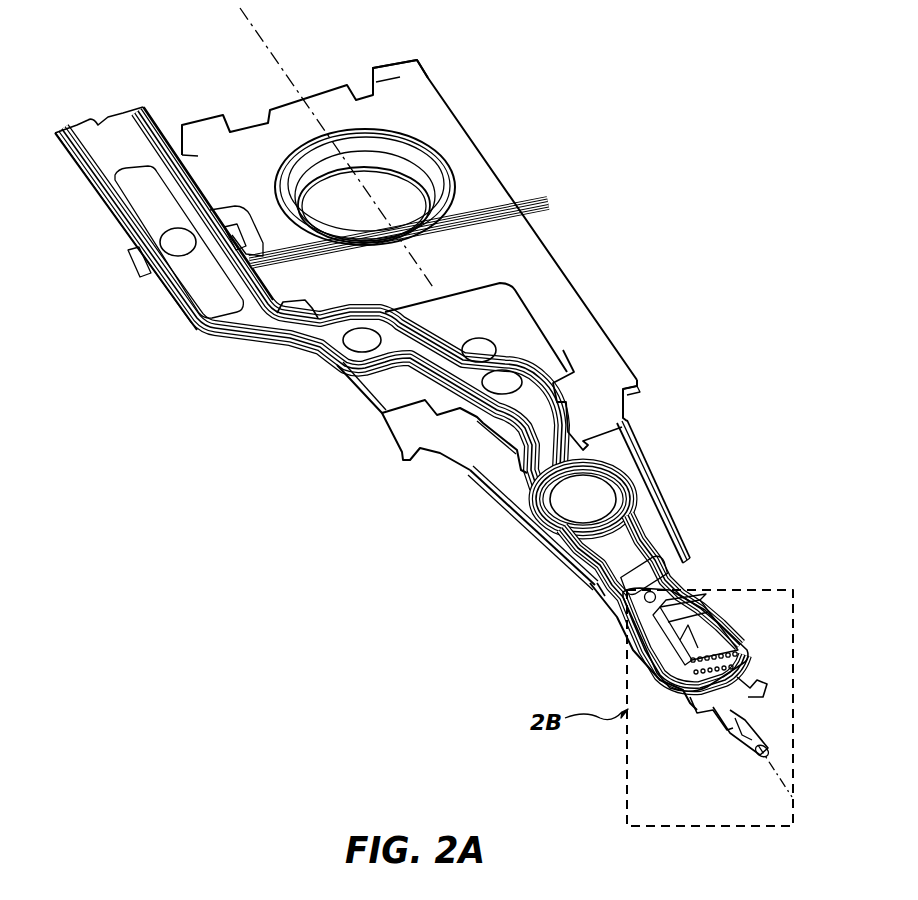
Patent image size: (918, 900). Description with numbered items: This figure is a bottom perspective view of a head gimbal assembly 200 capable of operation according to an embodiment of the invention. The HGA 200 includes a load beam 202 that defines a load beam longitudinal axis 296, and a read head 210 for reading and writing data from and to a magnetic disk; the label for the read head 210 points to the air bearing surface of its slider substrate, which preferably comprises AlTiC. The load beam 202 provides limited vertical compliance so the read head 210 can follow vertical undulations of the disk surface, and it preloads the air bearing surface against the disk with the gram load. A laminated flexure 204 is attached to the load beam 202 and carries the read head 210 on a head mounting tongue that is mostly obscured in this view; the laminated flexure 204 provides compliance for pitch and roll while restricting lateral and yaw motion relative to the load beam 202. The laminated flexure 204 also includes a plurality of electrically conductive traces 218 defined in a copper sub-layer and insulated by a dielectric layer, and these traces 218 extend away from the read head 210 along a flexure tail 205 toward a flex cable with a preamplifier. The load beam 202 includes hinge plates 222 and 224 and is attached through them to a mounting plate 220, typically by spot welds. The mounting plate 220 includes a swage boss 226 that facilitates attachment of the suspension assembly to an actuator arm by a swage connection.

The head gimbal assembly 200 is at (590, 185).
The load beam 202 is at (655, 465).
The laminated flexure 204 is at (622, 535).
The flexure tail 205 is at (97, 127).
The read head 210 is at (700, 627).
The electrically conductive traces 218 is at (358, 314).
The mounting plate 220 is at (400, 74).
The hinge plate 222 is at (453, 447).
The hinge plate 224 is at (626, 394).
The swage boss 226 is at (385, 162).
The load beam longitudinal axis 296 is at (787, 792).